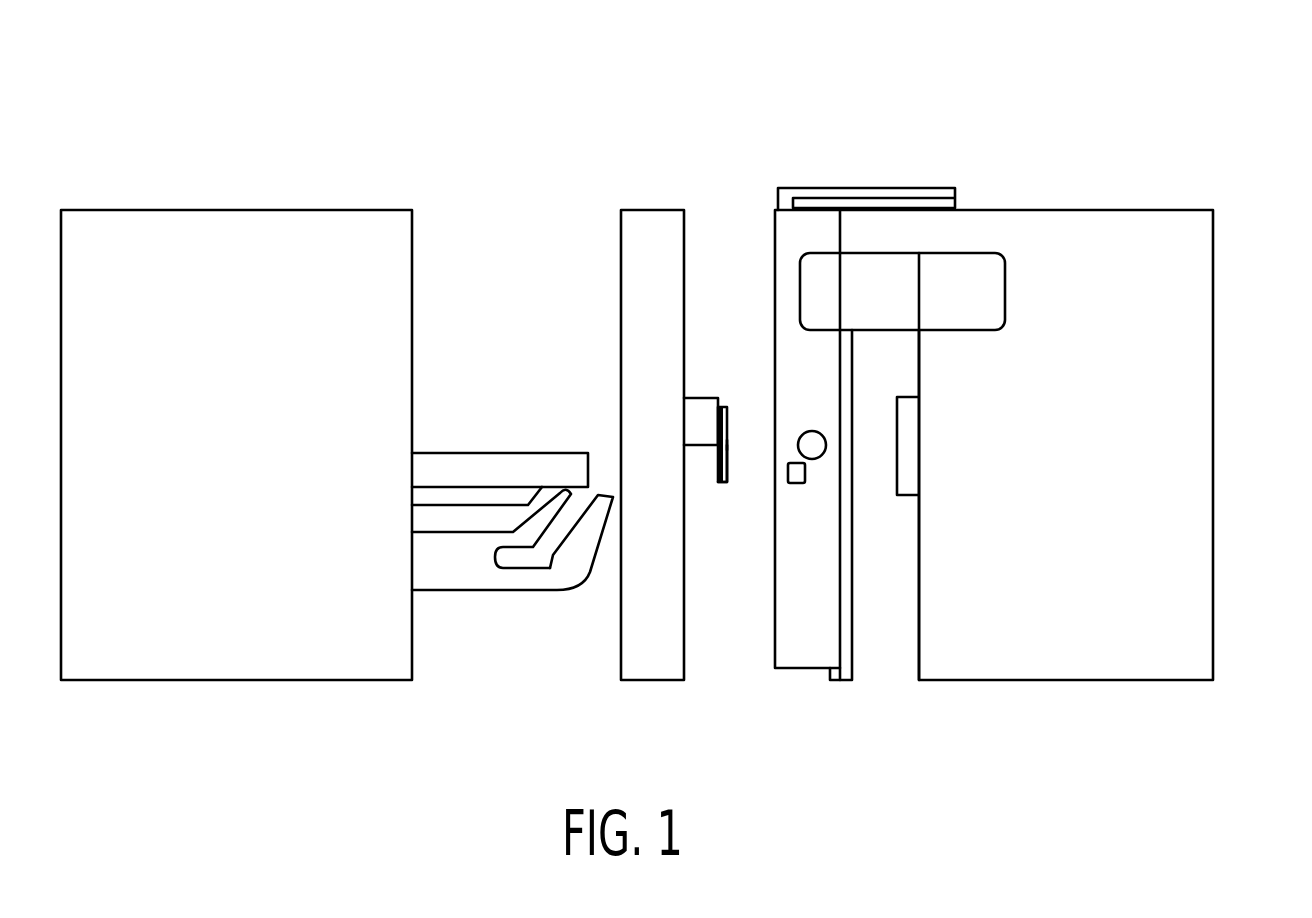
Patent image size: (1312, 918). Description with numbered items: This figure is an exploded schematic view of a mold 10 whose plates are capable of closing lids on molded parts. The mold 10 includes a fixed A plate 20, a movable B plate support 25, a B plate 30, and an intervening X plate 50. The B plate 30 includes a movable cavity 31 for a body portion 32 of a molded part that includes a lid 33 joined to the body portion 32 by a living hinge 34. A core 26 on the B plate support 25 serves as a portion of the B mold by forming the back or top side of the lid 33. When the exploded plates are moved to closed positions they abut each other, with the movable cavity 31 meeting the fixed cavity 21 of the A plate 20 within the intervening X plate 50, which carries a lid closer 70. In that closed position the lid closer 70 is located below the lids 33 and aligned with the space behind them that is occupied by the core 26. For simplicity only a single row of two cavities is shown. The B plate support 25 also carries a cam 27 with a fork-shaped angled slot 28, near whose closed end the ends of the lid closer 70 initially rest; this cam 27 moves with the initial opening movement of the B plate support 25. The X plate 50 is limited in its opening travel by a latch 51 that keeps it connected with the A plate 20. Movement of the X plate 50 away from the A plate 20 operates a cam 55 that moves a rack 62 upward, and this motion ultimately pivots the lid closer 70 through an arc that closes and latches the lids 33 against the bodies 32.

The mold 10 is at (962, 96).
The fixed A plate 20 is at (1200, 244).
The fixed cavity 21 is at (903, 495).
The movable B plate support 25 is at (246, 226).
The core 26 is at (478, 452).
The cam 27 is at (470, 572).
The fork-shaped angled slot 28 is at (558, 545).
The B plate 30 is at (638, 210).
The movable cavity 31 is at (697, 398).
The body portion 32 is at (731, 407).
The lid 33 is at (728, 483).
The living hinge 34 is at (728, 445).
The intervening X plate 50 is at (790, 225).
The latch 51 is at (858, 190).
The cam 55 is at (967, 265).
The rack 62 is at (853, 632).
The lid closer 70 is at (797, 483).